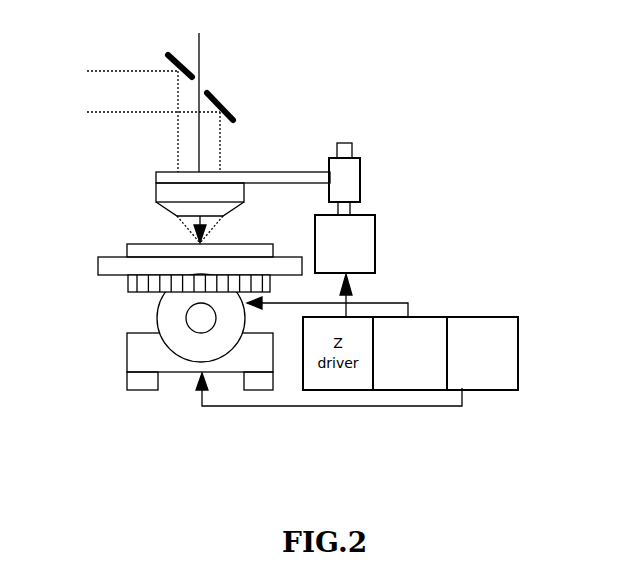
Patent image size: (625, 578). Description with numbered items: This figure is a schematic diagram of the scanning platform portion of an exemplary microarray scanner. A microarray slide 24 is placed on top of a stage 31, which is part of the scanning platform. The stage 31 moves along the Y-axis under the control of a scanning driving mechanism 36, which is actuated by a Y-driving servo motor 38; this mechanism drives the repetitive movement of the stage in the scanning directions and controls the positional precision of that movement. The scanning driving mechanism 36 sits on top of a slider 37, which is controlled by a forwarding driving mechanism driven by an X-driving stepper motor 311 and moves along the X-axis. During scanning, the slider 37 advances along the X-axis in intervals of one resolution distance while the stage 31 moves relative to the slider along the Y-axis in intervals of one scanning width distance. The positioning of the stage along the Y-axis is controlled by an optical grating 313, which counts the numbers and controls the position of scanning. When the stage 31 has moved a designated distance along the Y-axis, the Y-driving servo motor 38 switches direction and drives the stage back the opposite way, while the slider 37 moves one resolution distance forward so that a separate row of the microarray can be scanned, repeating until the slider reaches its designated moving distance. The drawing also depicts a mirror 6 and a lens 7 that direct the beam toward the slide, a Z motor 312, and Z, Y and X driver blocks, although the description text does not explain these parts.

The mirror 6 is at (225, 96).
The lens 7 is at (156, 183).
The microarray slide 24 is at (128, 250).
The stage 31 is at (107, 268).
The optical grating 313 is at (272, 283).
The scanning driving mechanism 36 is at (167, 313).
The slider 37 is at (140, 355).
The X-driving stepper motor 311 is at (497, 340).
The Z motor 312 is at (358, 233).
The Y-driving servo motor 38 is at (421, 376).